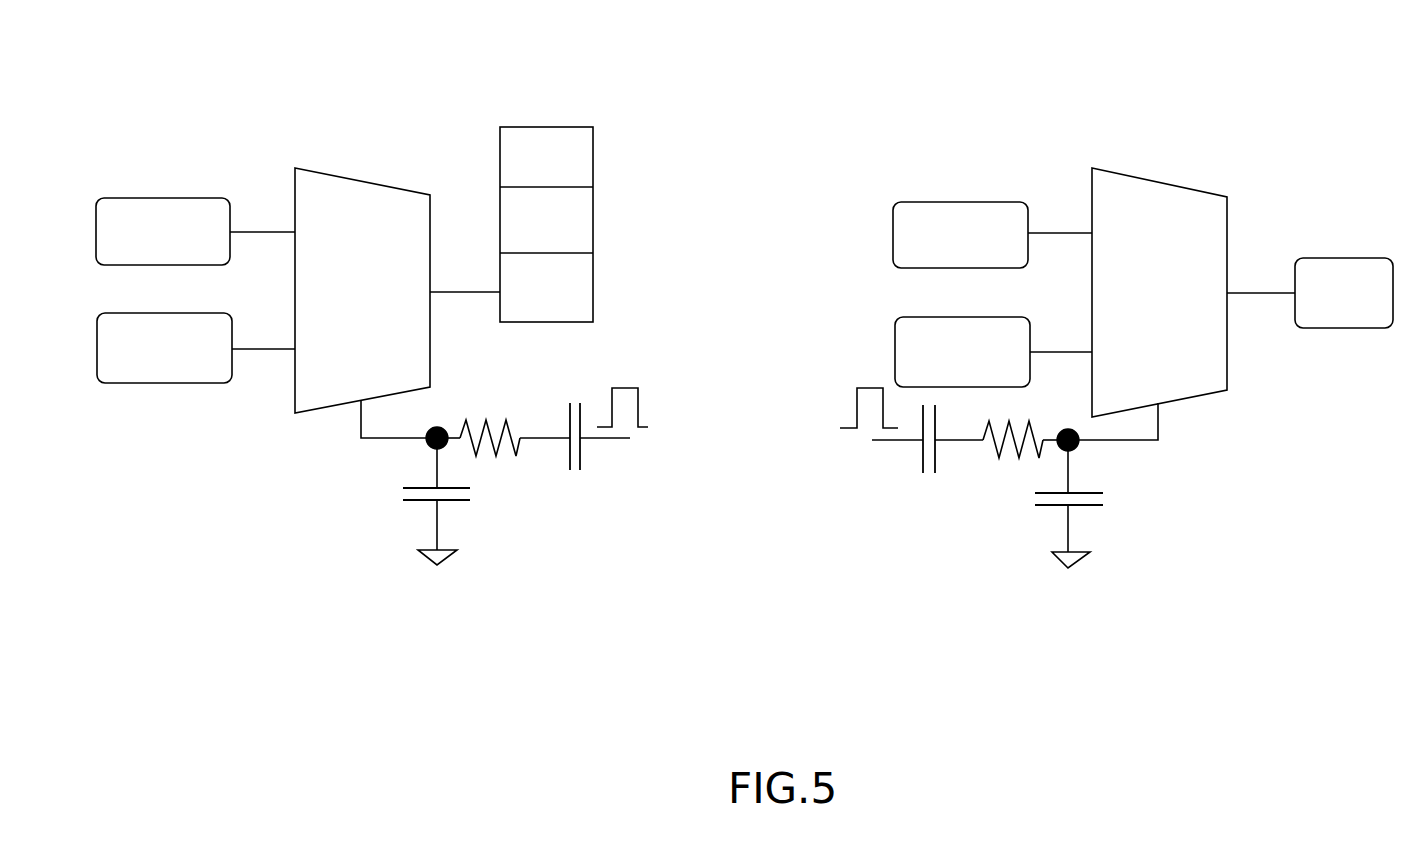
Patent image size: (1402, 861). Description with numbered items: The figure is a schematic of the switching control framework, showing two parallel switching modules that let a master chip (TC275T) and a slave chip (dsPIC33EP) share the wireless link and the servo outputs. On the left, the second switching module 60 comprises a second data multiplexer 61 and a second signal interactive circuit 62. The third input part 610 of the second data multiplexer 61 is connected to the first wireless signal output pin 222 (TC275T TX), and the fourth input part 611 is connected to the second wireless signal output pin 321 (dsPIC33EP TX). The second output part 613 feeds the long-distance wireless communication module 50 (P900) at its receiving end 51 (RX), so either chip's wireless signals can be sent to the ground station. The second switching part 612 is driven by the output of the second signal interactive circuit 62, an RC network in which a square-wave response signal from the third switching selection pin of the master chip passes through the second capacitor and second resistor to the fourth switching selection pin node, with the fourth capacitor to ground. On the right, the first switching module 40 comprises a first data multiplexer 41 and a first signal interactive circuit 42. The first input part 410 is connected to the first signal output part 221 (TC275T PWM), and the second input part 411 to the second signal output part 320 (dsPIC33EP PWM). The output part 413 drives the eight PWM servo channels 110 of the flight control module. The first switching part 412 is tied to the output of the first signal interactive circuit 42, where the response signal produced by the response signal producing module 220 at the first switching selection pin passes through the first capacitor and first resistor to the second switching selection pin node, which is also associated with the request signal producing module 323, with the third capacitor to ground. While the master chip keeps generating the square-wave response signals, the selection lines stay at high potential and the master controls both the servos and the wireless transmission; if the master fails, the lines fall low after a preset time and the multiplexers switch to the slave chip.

The second switching module 60 is at (408, 160).
The second data multiplexer 61 is at (352, 178).
The fourth input part 611 is at (293, 232).
The third input part 610 is at (293, 349).
The second switching part 612 is at (362, 403).
The second output part 613 is at (438, 298).
The second signal interactive circuit 62 is at (312, 508).
The second wireless signal output pin 321 is at (120, 205).
The first wireless signal output pin 222 is at (100, 360).
The long-distance wireless communication module 50 is at (517, 215).
The receiving end 51 is at (578, 288).
The first switching module 40 is at (1165, 160).
The first data multiplexer 41 is at (1158, 215).
The second input part 411 is at (1092, 233).
The first input part 410 is at (1092, 350).
The first switching part 412 is at (1160, 407).
The output part 413 is at (1228, 290).
The first signal interactive circuit 42 is at (1163, 510).
The second signal output part 320 is at (950, 215).
The first signal output part 221 is at (897, 330).
The response signal producing module 220 is at (850, 398).
The request signal producing module 323 is at (1080, 447).
The PWM servo channels 110 is at (1380, 270).